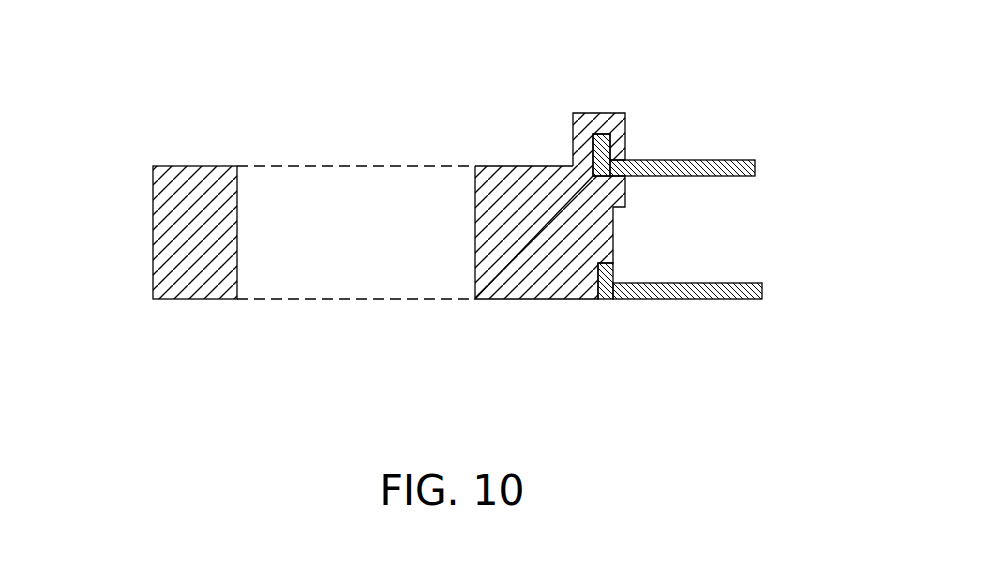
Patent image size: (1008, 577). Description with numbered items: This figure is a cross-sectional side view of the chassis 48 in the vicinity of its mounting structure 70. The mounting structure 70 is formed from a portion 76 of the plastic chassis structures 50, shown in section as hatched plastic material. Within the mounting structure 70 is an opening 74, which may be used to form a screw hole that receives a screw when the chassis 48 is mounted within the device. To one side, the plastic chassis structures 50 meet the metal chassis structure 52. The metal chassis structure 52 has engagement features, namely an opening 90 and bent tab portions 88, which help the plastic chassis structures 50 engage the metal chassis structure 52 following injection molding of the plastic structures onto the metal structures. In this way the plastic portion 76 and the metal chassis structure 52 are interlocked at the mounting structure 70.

The chassis 48 is at (112, 127).
The plastic chassis structures 50 is at (590, 112).
The metal chassis structure 52 is at (696, 300).
The mounting structure 70 is at (560, 139).
The opening 74 is at (475, 303).
The portion 76 is at (190, 300).
The bent tab portions 88 is at (611, 150).
The opening 90 is at (627, 178).